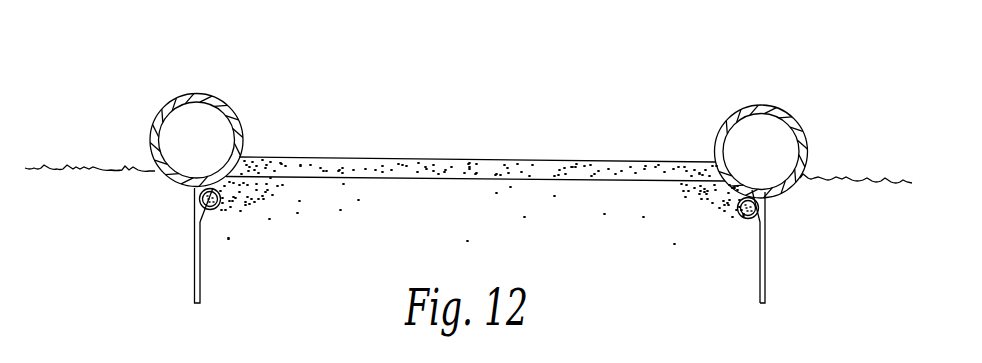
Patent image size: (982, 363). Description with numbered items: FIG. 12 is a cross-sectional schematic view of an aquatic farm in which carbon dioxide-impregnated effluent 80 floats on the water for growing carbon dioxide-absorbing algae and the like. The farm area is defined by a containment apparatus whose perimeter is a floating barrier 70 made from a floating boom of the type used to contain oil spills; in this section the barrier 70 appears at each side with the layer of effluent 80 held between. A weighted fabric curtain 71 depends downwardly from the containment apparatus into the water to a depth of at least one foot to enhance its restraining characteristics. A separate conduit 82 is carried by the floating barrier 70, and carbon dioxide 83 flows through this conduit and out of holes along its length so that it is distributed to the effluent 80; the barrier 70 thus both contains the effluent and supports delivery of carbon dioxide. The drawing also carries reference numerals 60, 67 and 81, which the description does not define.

The water surface 60 is at (110, 170).
The floating platform assembly 67 is at (485, 121).
The floating barrier 70 is at (167, 96).
The weighted fabric curtain 71 is at (195, 246).
The carbon dioxide-impregnated effluent 80 is at (442, 168).
The water 81 is at (603, 202).
The separate conduit 82 is at (240, 196).
The carbon dioxide 83 is at (206, 222).